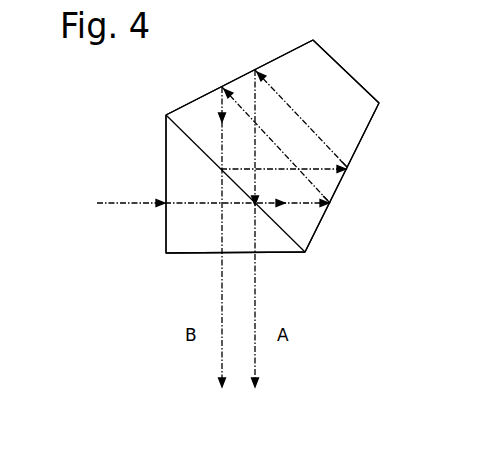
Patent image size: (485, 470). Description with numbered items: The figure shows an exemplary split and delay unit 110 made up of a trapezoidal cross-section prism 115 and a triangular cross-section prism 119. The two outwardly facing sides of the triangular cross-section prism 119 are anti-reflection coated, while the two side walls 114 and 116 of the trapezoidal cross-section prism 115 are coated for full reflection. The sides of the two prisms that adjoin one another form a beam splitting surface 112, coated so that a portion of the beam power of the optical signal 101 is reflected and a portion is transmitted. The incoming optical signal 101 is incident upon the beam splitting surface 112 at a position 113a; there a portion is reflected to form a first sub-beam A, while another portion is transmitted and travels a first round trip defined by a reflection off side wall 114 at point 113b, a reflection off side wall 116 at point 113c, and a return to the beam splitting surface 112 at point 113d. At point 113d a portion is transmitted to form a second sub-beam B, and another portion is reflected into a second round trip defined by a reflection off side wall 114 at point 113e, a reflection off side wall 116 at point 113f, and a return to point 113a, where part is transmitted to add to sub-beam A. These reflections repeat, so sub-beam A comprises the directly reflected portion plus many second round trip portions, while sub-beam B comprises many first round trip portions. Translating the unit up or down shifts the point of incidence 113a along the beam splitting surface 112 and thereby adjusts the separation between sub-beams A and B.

The split and delay unit 110 is at (381, 70).
The optical signal 101 is at (132, 205).
The beam splitting surface 112 is at (315, 237).
The side wall 114 is at (373, 117).
The trapezoidal cross-section prism 115 is at (163, 113).
The side wall 116 is at (303, 44).
The triangular cross-section prism 119 is at (287, 253).
The point of incidence 113a is at (253, 205).
The reflection point 113b is at (329, 204).
The reflection point 113c is at (218, 88).
The return point 113d is at (220, 170).
The reflection point 113e is at (346, 169).
The reflection point 113f is at (253, 70).